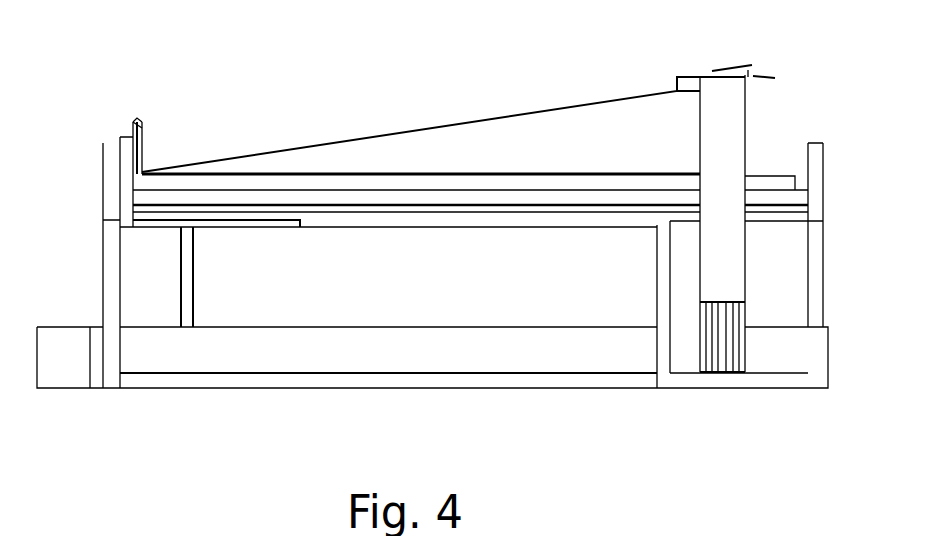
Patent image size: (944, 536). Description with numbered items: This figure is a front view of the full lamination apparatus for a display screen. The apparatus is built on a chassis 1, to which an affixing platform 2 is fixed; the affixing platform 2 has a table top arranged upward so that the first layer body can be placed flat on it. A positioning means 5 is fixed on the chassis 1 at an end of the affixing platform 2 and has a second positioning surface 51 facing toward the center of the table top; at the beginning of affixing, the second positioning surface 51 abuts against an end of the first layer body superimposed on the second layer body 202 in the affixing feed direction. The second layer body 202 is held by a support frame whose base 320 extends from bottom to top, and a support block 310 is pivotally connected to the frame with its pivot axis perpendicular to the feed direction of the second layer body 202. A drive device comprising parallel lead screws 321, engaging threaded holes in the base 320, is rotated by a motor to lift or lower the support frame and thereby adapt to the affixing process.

The chassis 1 is at (103, 292).
The affixing platform 2 is at (193, 300).
The positioning means 5 is at (143, 151).
The second positioning surface 51 is at (139, 123).
The second layer body 202 is at (567, 105).
The support block 310 is at (750, 72).
The base 320 is at (733, 123).
The lead screws 321 is at (745, 358).